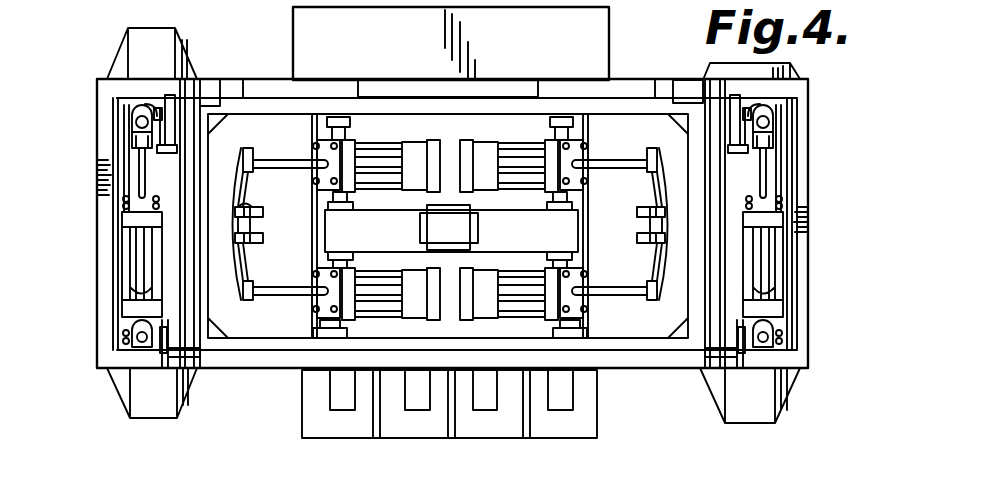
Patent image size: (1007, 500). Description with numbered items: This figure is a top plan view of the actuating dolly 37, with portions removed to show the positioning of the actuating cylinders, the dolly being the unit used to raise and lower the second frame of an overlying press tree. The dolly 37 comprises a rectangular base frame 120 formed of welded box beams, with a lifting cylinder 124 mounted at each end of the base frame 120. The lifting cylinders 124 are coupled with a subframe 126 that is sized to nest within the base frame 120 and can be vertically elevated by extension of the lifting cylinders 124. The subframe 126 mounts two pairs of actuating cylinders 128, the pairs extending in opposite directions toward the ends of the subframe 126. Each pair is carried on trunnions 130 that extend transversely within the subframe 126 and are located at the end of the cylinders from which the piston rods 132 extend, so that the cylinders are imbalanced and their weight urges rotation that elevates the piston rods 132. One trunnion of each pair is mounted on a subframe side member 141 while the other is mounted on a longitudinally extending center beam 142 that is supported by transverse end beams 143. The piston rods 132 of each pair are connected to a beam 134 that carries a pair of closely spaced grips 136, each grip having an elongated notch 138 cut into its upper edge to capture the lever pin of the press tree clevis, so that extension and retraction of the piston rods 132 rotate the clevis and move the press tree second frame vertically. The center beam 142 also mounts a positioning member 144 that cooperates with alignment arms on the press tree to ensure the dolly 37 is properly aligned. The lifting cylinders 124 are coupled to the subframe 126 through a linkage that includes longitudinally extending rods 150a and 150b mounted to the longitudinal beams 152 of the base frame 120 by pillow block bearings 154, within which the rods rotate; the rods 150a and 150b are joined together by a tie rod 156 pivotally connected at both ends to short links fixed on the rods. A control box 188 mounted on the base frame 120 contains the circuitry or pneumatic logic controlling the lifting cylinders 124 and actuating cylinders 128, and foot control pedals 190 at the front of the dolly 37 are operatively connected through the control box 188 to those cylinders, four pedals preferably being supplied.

The actuating dolly 37 is at (626, 66).
The base frame 120 is at (812, 132).
The lifting cylinder 124 is at (133, 270).
The subframe 126 is at (643, 103).
The actuating cylinder 128 is at (366, 157).
The trunnion 130 is at (325, 130).
The piston rod 132 is at (268, 172).
The beam 134 is at (255, 268).
The grip 136 is at (262, 218).
The notch 138 is at (242, 206).
The subframe side member 141 is at (668, 122).
The center beam 142 is at (388, 242).
The transverse end beam 143 is at (586, 327).
The positioning member 144 is at (466, 229).
The longitudinal rod 150a is at (148, 336).
The longitudinal rod 150b is at (150, 103).
The longitudinal beam 152 is at (258, 79).
The pillow block bearing 154 is at (136, 122).
The tie rod 156 is at (118, 152).
The control box 188 is at (421, 56).
The foot control pedal 190 is at (337, 387).